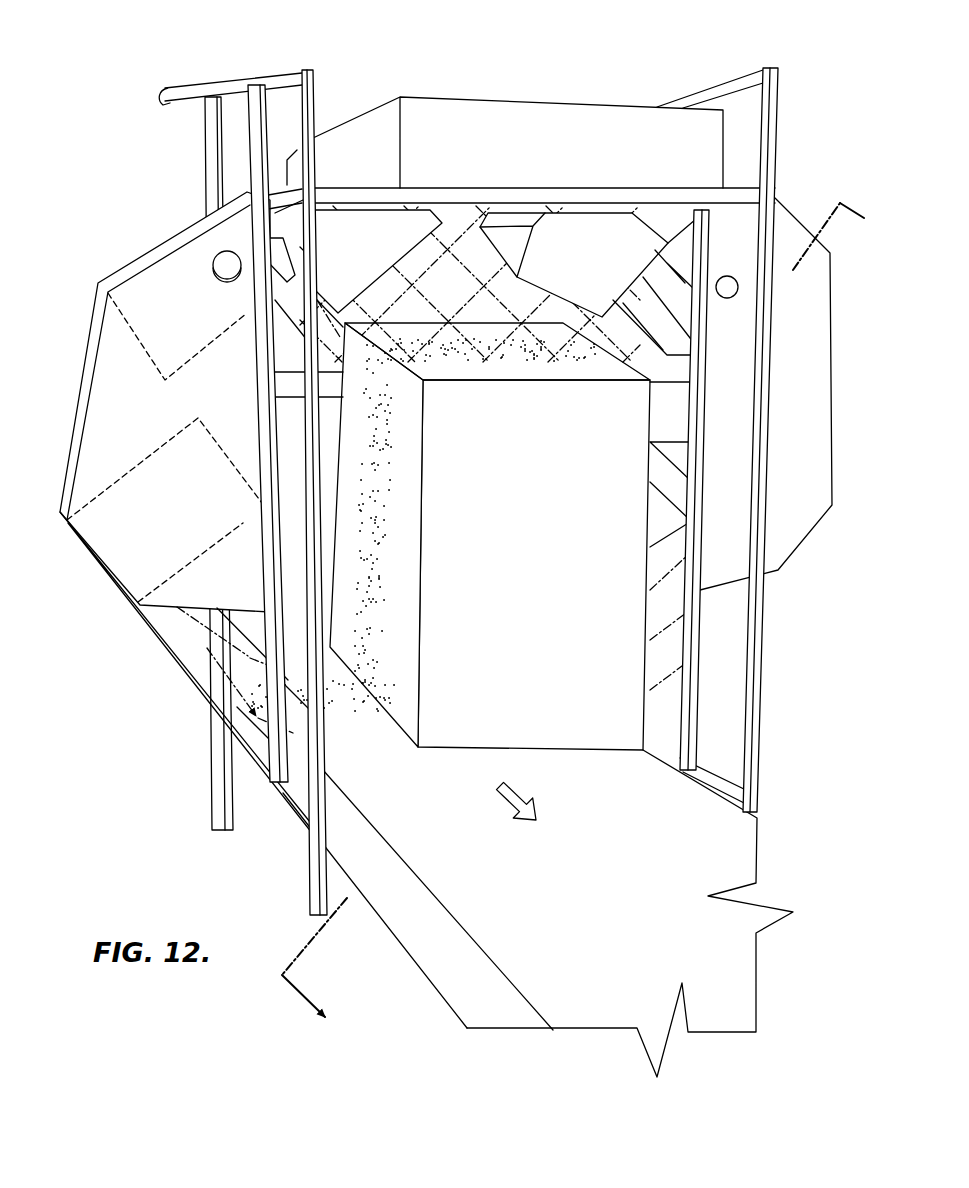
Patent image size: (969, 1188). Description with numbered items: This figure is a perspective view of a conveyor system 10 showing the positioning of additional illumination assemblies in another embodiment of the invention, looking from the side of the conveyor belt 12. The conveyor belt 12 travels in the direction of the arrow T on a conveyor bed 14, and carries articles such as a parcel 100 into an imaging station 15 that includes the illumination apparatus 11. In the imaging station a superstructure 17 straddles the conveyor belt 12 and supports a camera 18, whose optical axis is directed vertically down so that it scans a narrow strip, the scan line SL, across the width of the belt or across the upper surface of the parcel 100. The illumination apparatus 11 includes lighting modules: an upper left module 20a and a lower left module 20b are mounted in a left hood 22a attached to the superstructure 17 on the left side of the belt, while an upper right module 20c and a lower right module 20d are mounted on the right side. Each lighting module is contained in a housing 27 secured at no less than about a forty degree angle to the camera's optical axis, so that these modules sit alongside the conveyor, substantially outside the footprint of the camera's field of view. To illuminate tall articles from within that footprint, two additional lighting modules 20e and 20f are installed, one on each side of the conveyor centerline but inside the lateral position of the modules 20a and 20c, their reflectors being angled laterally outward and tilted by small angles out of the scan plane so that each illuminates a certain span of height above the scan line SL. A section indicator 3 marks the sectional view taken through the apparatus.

The conveyor system 10 is at (157, 814).
The illumination apparatus 11 is at (719, 614).
The conveyor belt 12 is at (553, 863).
The conveyor bed 14 is at (440, 950).
The imaging station 15 is at (410, 64).
The superstructure 17 is at (313, 108).
The camera 18 is at (544, 97).
The upper left module 20a is at (286, 284).
The lower left module 20b is at (167, 438).
The upper right module 20c is at (676, 228).
The lower right module 20d is at (675, 421).
The additional lighting module 20e is at (339, 255).
The additional lighting module 20f is at (585, 258).
The left hood 22a is at (120, 348).
The housing 27 is at (692, 257).
The parcel 100 is at (527, 520).
The scan line SL is at (352, 712).
The direction of travel T is at (522, 796).
The section line 3- 3 is at (573, 610).